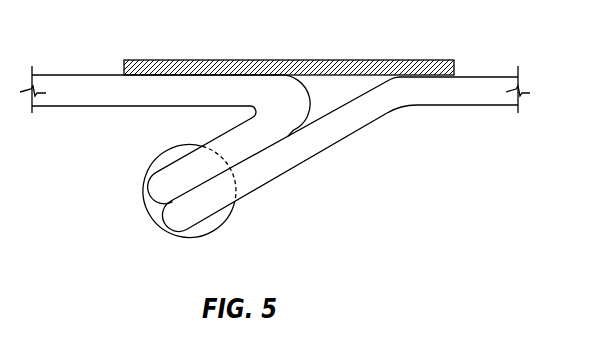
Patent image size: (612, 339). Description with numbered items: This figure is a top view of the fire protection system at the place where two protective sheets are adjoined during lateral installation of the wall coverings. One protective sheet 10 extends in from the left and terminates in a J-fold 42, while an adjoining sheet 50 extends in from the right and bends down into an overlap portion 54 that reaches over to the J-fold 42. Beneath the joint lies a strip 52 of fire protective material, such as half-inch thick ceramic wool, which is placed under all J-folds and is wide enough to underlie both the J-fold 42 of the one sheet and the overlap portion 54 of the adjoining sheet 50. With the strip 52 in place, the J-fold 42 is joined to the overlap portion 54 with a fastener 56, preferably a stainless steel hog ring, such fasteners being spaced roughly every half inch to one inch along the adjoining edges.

The first sheet / strip 10 is at (138, 106).
The J-fold 42 is at (162, 185).
The adjoining sheet 50 is at (434, 105).
The strip of fire protective material 52 is at (198, 59).
The overlap portion 54 is at (283, 172).
The fastener 56 is at (218, 230).